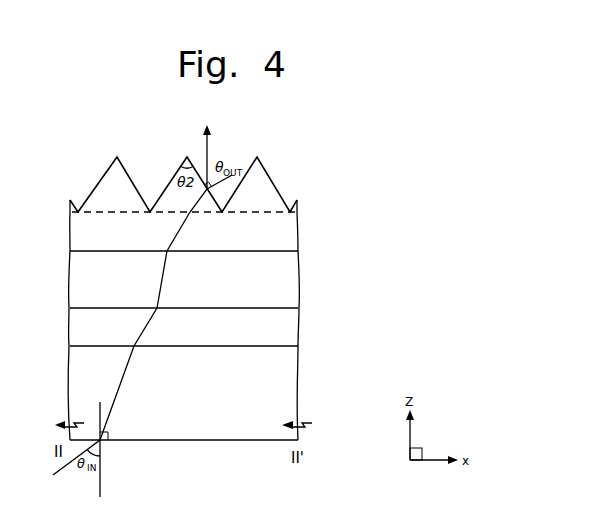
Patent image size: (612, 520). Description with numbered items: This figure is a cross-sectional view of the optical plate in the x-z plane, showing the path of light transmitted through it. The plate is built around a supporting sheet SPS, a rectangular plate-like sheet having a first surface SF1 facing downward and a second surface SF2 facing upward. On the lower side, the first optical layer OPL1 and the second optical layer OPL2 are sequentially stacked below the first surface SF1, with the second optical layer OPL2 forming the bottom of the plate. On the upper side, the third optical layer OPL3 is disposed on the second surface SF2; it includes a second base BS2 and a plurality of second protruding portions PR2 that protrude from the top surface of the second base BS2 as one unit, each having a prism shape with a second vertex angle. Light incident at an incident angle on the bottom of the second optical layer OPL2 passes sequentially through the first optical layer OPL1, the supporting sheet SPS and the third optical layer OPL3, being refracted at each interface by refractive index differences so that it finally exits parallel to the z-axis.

The third optical layer OPL3 is at (238, 204).
The second protruding portions PR2 is at (266, 190).
The second base BS2 is at (290, 225).
The second surface SF2 is at (267, 250).
The supporting sheet SPS is at (290, 280).
The first surface SF1 is at (267, 310).
The first optical layer OPL1 is at (290, 334).
The second optical layer OPL2 is at (290, 405).